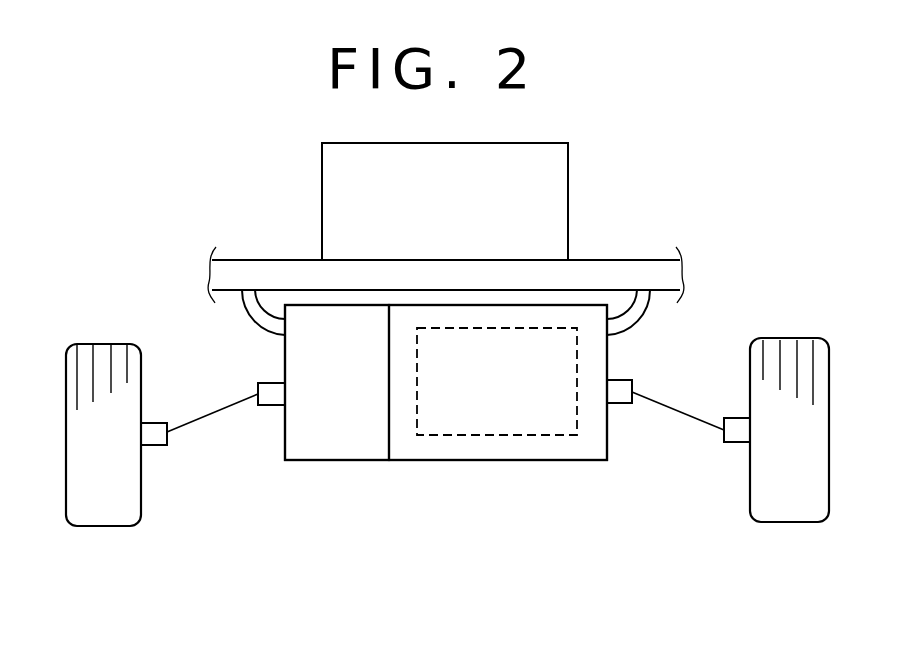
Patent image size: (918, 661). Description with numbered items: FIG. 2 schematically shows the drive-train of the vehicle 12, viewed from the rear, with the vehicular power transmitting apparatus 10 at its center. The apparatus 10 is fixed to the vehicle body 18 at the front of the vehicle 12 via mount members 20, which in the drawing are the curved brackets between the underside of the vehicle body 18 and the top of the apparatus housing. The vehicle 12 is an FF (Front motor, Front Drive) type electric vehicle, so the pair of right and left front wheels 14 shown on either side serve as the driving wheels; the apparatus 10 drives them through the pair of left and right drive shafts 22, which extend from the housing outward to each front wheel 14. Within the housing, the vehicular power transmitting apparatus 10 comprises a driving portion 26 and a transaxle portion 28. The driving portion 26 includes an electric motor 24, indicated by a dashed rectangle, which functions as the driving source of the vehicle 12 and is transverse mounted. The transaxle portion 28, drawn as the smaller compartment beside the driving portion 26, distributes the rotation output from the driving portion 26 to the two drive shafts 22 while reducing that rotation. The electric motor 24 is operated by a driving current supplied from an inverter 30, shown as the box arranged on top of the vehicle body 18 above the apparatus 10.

The vehicular power transmitting apparatus 10 is at (453, 527).
The vehicle 12 is at (243, 192).
The front wheels 14 is at (103, 350).
The vehicle body 18 is at (638, 262).
The mount members 20 is at (262, 322).
The drive shafts 22 is at (218, 410).
The electric motor 24 is at (555, 435).
The driving portion 26 is at (450, 453).
The transaxle portion 28 is at (351, 455).
The inverter 30 is at (562, 176).